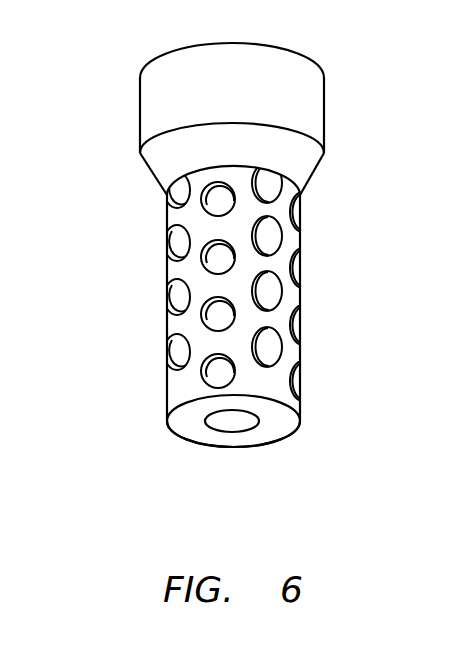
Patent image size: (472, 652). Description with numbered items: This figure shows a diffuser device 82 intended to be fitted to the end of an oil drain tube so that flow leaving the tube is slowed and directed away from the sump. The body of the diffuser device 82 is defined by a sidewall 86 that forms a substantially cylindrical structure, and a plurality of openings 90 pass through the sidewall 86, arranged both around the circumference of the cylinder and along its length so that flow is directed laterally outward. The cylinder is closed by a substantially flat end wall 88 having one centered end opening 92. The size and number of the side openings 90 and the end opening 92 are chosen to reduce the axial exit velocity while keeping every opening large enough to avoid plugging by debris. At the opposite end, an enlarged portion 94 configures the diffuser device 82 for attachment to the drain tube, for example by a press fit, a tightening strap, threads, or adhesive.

The diffuser device 82 is at (350, 87).
The enlarged portion 94 is at (146, 105).
The sidewall 86 is at (293, 243).
The openings 90 is at (275, 297).
The end wall 88 is at (190, 430).
The end opening 92 is at (232, 427).